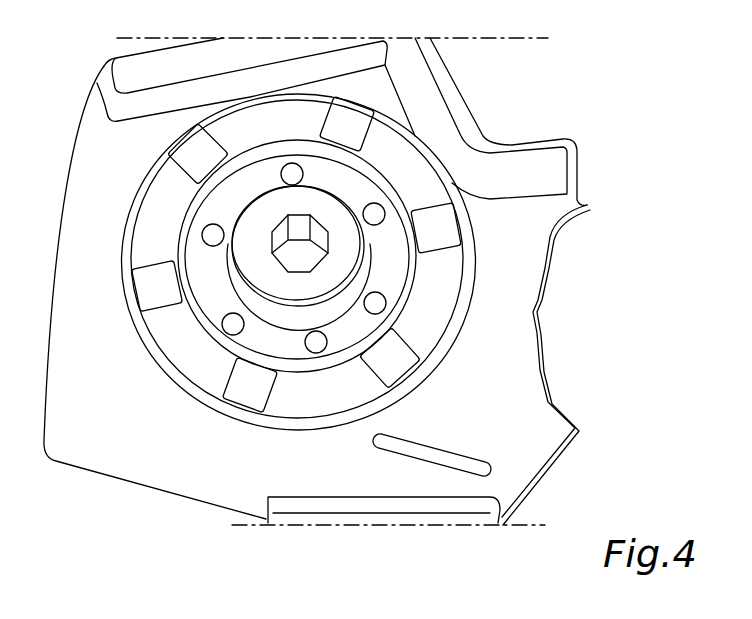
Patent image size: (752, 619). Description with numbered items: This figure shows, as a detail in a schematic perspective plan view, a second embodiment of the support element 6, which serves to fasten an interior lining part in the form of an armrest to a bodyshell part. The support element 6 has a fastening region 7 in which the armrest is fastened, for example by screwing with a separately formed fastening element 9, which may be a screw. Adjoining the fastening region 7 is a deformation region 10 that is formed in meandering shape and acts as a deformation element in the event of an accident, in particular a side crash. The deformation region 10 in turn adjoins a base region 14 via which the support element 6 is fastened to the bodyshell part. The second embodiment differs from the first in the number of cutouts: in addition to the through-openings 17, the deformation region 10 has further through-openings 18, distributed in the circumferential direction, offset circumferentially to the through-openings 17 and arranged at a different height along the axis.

The support element 6 is at (573, 166).
The fastening region 7 is at (275, 318).
The fastening element 9 is at (265, 225).
The deformation region 10 is at (468, 305).
The base region 14 is at (535, 416).
The through-openings 17 is at (371, 112).
The further through-openings 18 is at (376, 206).